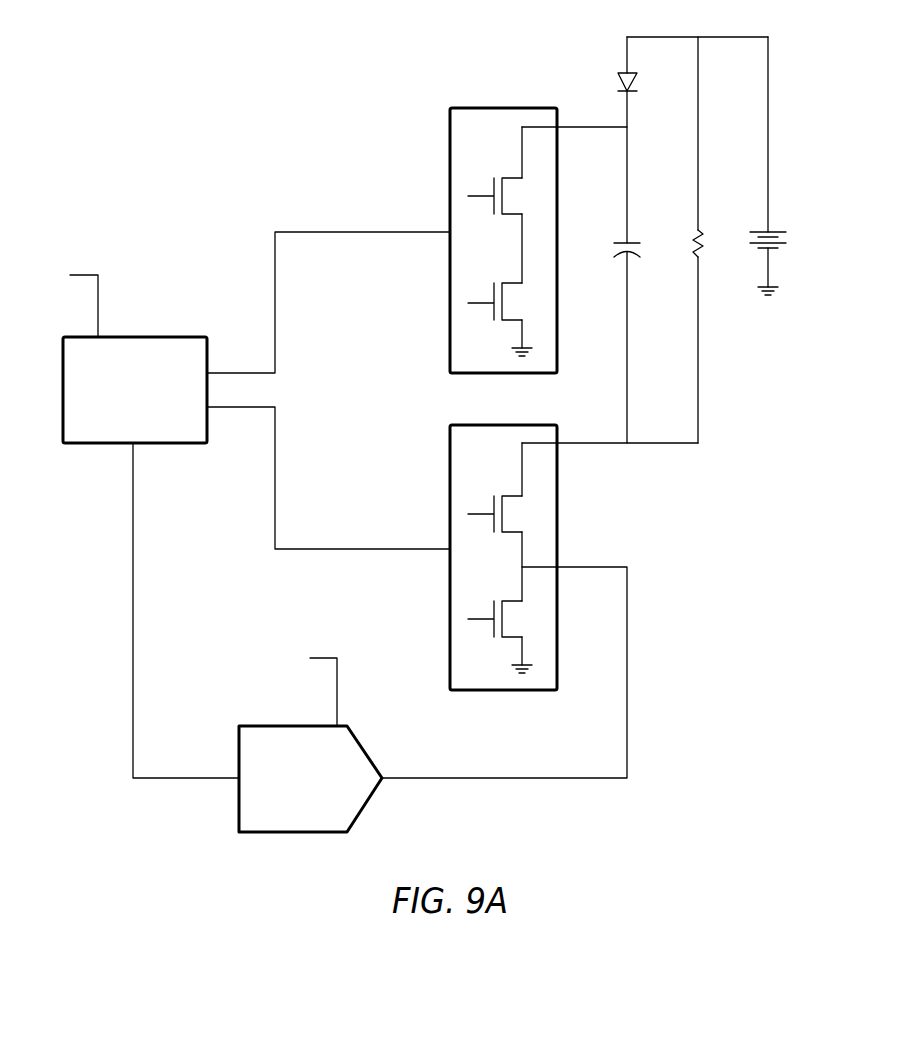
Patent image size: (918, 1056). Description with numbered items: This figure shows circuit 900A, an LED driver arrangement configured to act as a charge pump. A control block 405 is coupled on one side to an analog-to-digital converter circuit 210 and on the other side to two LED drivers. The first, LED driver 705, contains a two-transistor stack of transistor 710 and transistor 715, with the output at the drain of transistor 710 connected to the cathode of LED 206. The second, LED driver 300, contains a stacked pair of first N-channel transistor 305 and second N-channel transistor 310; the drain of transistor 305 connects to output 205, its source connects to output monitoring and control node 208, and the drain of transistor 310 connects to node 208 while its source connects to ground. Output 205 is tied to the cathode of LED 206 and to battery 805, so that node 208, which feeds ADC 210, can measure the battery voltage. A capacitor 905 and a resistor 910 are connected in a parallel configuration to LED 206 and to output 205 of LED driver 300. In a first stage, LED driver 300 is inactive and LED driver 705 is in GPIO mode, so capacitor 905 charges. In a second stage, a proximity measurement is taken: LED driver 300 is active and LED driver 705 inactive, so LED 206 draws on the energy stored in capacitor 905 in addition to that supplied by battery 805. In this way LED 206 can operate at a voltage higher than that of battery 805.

The circuit 900A is at (160, 84).
The control block 405 is at (153, 412).
The analog-to-digital converter circuit 210 is at (274, 726).
The LED driver 705 is at (476, 108).
The transistor 710 is at (505, 178).
The transistor 715 is at (505, 283).
The LED driver 300 is at (478, 425).
The first N-channel transistor 305 is at (505, 496).
The second N-channel transistor 310 is at (505, 601).
The output 205 is at (593, 443).
The output monitoring and control node 208 is at (627, 655).
The LED 206 is at (617, 81).
The capacitor 905 is at (629, 242).
The resistor 910 is at (701, 233).
The battery 805 is at (780, 232).